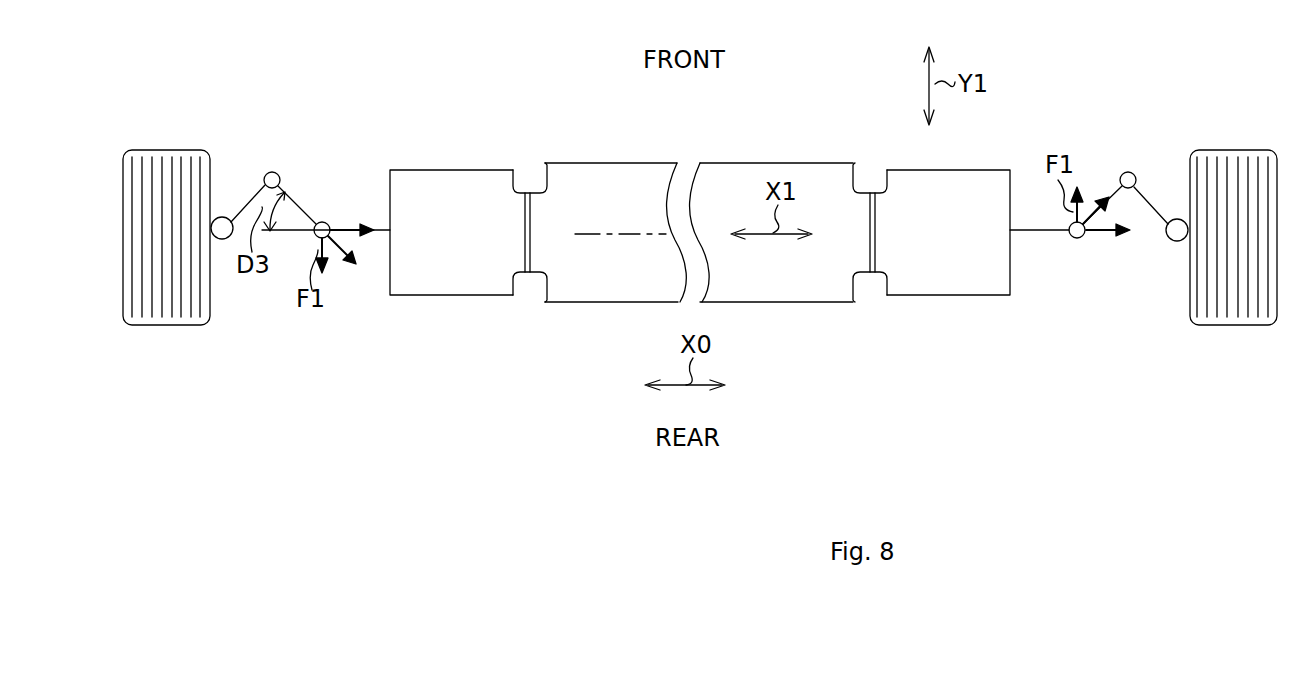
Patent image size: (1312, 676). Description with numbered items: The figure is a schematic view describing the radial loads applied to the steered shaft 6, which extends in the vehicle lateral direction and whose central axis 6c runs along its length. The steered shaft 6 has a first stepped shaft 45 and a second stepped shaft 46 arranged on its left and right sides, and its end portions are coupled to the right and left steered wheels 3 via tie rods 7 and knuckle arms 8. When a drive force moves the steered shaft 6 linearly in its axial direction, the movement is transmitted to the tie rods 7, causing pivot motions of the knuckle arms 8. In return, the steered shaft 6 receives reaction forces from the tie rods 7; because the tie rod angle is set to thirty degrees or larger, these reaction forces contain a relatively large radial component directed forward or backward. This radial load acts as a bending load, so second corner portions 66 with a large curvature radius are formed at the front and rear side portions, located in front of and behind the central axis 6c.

The steered wheels 3 is at (170, 325).
The steered shaft 6 is at (737, 162).
The central axis 6c is at (625, 230).
The tie rods 7 is at (298, 202).
The knuckle arms 8 is at (245, 202).
The first stepped shaft 45 is at (557, 305).
The second stepped shaft 46 is at (845, 305).
The second corner portions 66 is at (538, 184).